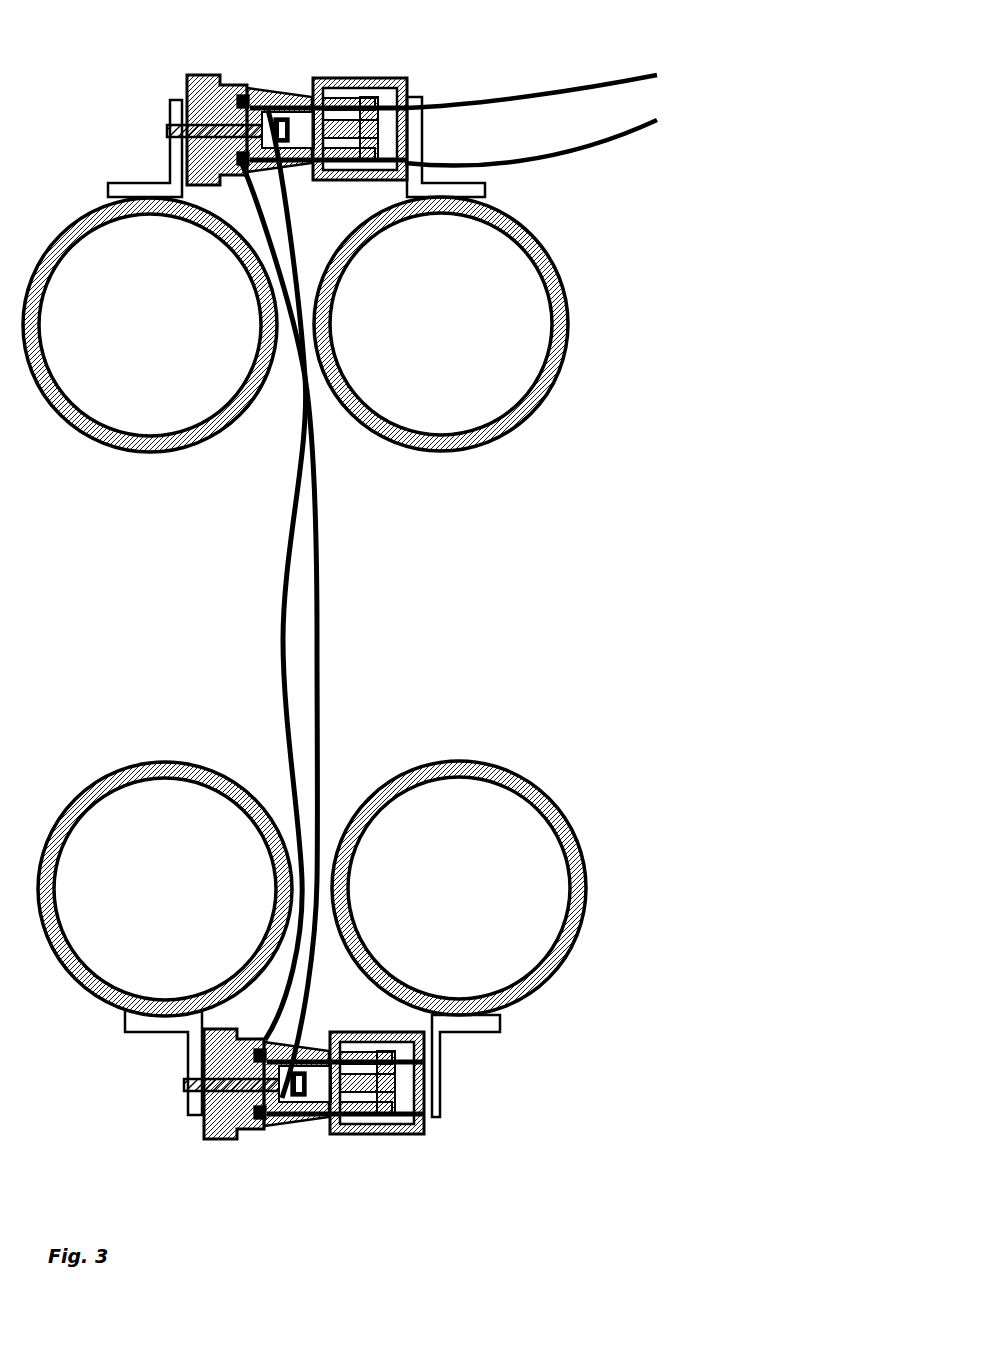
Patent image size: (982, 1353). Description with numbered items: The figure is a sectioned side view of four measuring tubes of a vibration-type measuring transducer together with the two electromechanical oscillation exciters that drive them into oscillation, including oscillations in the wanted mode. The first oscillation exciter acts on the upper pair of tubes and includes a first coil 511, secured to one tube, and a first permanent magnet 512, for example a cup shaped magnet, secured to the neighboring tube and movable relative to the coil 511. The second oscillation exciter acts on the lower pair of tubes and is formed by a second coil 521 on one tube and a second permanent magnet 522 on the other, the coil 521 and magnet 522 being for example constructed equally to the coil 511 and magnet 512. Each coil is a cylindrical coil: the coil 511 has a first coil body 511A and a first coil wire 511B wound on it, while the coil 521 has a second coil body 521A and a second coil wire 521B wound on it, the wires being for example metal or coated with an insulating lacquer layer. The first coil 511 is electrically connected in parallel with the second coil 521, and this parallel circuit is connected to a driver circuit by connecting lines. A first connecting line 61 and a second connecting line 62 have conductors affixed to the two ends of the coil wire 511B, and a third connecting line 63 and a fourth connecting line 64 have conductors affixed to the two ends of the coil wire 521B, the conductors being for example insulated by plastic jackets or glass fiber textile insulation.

The first coil 511 is at (150, 84).
The first coil body 511A is at (262, 86).
The first coil wire 511B is at (306, 96).
The first permanent magnet 512 is at (433, 87).
The second coil 521 is at (199, 1163).
The second coil body 521A is at (290, 1115).
The second coil wire 521B is at (323, 1118).
The second permanent magnet 522 is at (442, 1143).
The first connecting line 61 is at (583, 147).
The second connecting line 62 is at (500, 90).
The third connecting line 63 is at (293, 700).
The fourth connecting line 64 is at (302, 658).